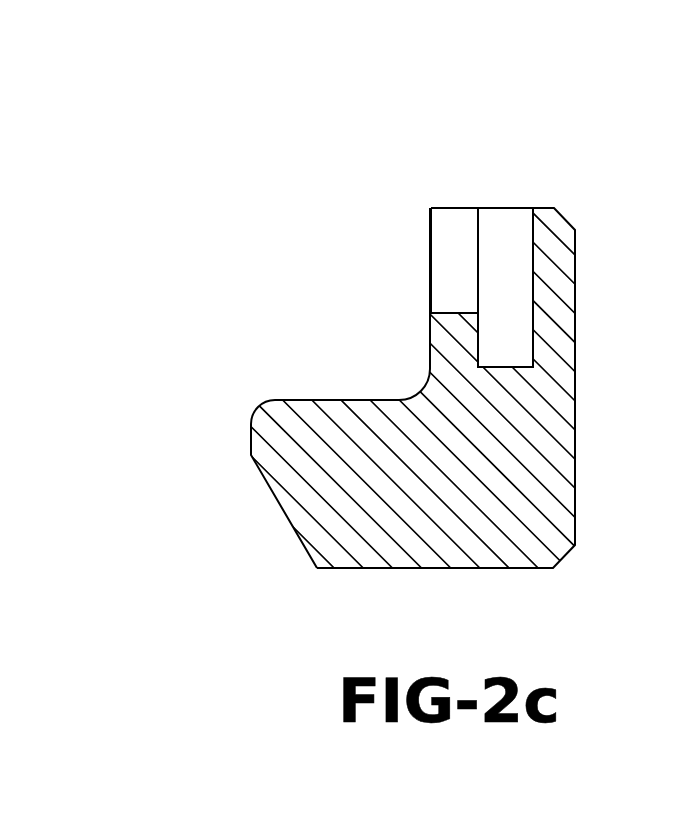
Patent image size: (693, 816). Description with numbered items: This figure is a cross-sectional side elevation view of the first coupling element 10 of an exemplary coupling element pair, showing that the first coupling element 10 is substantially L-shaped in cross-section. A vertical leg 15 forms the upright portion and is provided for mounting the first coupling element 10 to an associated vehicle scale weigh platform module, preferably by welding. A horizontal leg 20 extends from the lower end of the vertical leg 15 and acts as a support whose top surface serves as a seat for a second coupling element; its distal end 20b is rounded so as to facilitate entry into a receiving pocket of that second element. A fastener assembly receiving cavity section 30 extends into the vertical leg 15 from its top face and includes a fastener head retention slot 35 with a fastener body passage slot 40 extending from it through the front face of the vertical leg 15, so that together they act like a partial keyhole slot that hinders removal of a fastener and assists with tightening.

The first coupling element 10 is at (226, 150).
The vertical leg 15 is at (563, 346).
The horizontal leg 20 is at (337, 519).
The distal end 20b is at (252, 442).
The fastener assembly receiving cavity section 30 is at (462, 190).
The fastener head retention slot 35 is at (514, 228).
The fastener body passage slot 40 is at (447, 237).